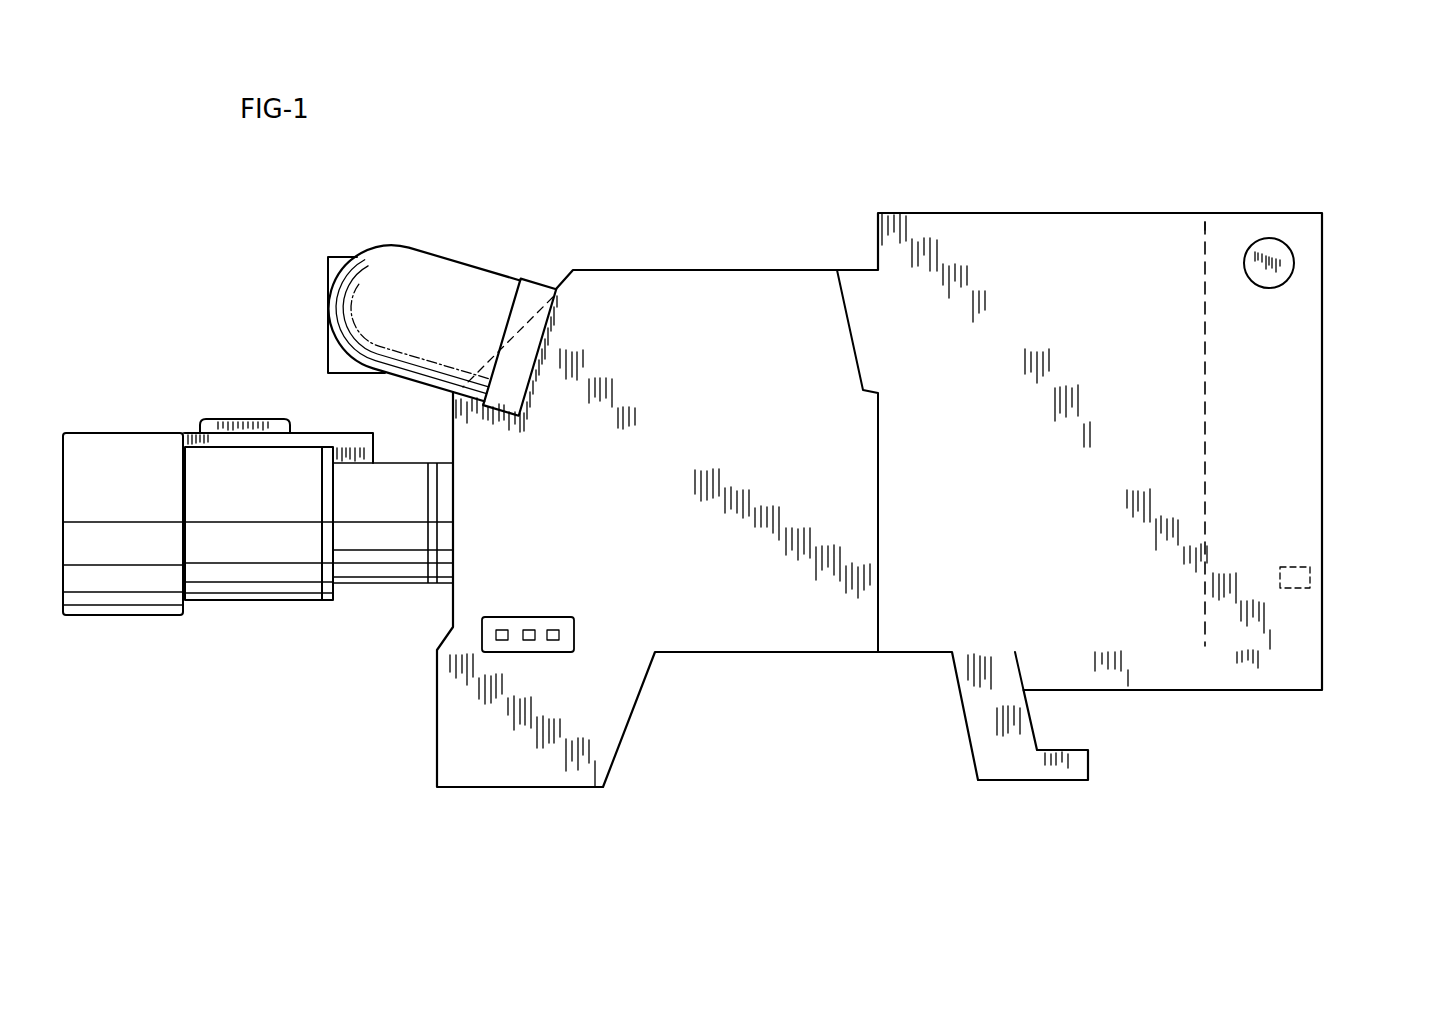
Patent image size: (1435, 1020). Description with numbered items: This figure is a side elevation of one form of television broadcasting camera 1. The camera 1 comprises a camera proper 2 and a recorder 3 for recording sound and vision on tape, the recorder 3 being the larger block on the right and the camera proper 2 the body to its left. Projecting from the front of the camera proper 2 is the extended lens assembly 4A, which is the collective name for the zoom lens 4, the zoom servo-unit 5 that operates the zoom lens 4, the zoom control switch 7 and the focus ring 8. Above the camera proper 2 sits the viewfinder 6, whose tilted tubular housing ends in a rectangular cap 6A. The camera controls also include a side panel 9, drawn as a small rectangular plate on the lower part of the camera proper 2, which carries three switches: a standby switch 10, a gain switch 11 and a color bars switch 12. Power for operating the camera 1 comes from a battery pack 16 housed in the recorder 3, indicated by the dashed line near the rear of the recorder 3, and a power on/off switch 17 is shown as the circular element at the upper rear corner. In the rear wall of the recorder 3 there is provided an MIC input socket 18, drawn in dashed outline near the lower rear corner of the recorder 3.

The television broadcasting camera 1 is at (774, 664).
The camera proper 2 is at (678, 424).
The recorder 3 is at (1052, 492).
The zoom lens 4 is at (286, 604).
The extended lens assembly 4A is at (178, 420).
The zoom servo-unit 5 is at (358, 437).
The viewfinder 6 is at (345, 300).
The handle end cap 6A is at (543, 347).
The zoom control switch 7 is at (238, 420).
The focus ring 8 is at (130, 578).
The side panel 9 is at (568, 636).
The standby switch 10 is at (503, 628).
The gain switch 11 is at (531, 628).
The color bars switch 12 is at (554, 628).
The battery pack 16 is at (1233, 223).
The power on/off switch 17 is at (1283, 262).
The MIC input socket 18 is at (1312, 578).